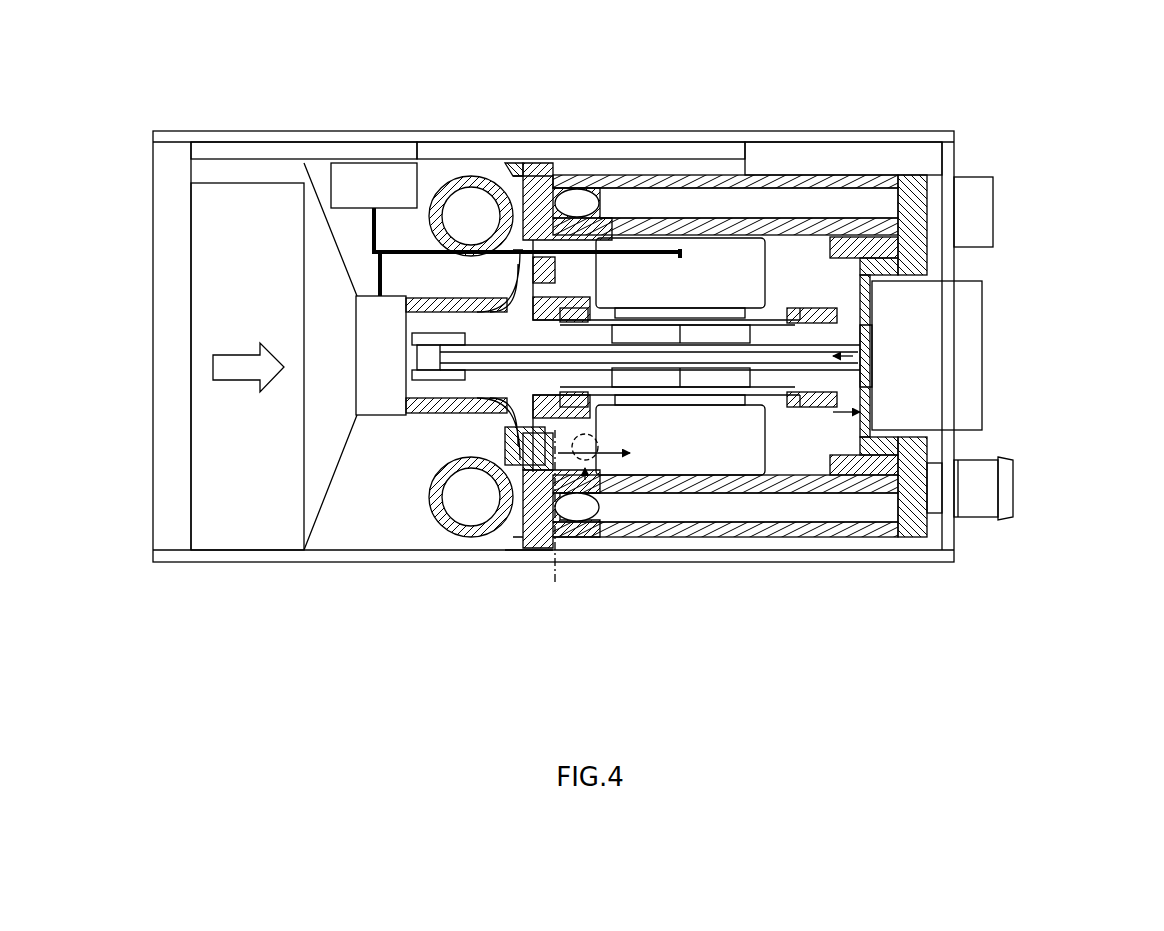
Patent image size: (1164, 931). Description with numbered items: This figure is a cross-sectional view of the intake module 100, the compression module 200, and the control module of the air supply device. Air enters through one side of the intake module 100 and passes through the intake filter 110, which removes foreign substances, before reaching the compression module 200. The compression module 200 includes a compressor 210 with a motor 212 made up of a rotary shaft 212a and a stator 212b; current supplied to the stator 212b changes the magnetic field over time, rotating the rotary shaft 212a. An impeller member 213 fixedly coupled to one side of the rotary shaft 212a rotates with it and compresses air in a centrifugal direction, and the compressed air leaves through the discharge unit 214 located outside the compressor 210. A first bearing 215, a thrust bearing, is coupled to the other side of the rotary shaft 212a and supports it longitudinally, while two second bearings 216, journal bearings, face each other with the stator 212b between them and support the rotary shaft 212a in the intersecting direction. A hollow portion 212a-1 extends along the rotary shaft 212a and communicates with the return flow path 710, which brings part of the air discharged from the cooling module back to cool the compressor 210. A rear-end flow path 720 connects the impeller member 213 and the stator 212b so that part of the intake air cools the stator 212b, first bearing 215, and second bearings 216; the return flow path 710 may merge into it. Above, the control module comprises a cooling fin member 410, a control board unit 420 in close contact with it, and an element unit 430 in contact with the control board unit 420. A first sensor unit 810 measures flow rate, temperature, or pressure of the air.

The intake module 100 is at (240, 572).
The intake filter 110 is at (172, 540).
The compression module 200 is at (594, 622).
The compressor 210 is at (608, 553).
The motor 212 is at (1062, 230).
The rotary shaft 212a is at (852, 335).
The hollow portion 212a-1 is at (817, 350).
The stator 212b is at (873, 255).
The impeller member 213 is at (432, 413).
The discharge unit 214 is at (482, 193).
The first bearing 215 is at (750, 280).
The second bearing 216 is at (800, 433).
The cooling fin member 410 is at (247, 185).
The control board unit 420 is at (370, 141).
The element unit 430 is at (725, 165).
The return flow path 710 is at (597, 470).
The rear-end flow path 720 is at (548, 468).
The first sensor unit 810 is at (377, 405).